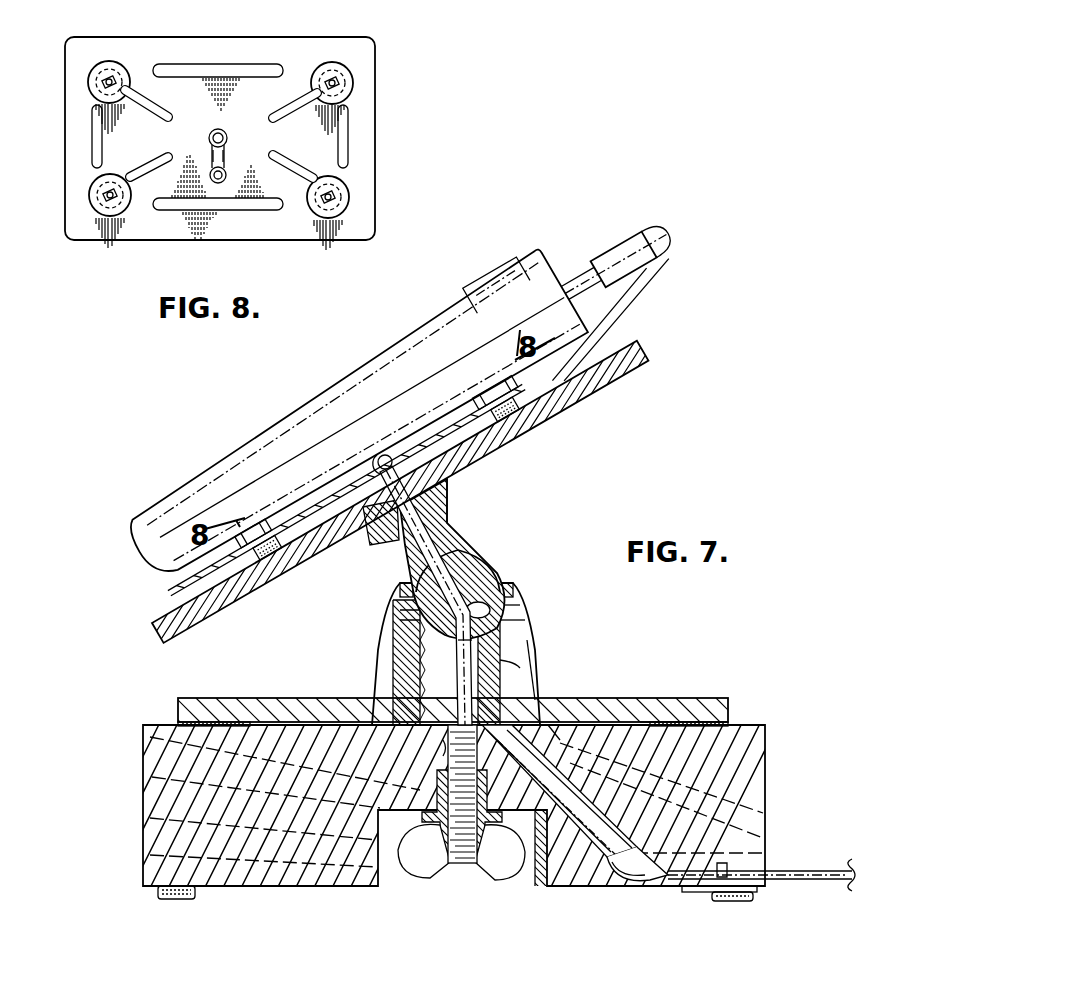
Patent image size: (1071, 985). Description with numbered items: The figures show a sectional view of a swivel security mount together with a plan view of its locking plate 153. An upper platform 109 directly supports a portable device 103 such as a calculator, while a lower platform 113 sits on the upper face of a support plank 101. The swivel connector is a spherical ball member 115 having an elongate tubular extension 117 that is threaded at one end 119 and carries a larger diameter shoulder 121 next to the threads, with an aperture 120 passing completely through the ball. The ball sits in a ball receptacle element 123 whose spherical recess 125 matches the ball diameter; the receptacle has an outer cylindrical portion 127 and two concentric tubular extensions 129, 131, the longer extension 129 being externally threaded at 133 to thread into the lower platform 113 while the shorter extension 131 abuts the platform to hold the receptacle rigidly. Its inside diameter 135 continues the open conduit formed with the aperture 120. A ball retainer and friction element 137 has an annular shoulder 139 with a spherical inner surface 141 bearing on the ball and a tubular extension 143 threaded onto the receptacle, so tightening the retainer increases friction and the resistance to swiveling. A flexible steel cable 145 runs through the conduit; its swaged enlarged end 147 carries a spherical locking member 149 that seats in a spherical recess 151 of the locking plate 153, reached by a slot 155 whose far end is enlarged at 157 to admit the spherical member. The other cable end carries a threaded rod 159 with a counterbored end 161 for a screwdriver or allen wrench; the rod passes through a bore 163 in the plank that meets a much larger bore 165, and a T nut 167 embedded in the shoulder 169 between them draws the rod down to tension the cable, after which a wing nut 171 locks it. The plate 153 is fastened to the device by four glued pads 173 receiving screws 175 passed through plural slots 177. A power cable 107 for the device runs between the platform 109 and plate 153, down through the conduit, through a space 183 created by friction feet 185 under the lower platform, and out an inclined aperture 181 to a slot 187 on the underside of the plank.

In FIG. 7, the plank 101 is at (210, 887).
In FIG. 7, the portable device 103 is at (203, 470).
In FIG. 7, the power cable 107 is at (648, 292).
In FIG. 7, the upper platform 109 is at (655, 358).
In FIG. 7, the lower platform 113 is at (605, 698).
In FIG. 7, the spherical ball member 115 is at (490, 565).
In FIG. 7, the elongate tubular extension 117 is at (447, 530).
In FIG. 7, the threads 119 is at (370, 545).
In FIG. 7, the aperture 120 is at (522, 606).
In FIG. 7, the shoulder 121 is at (443, 490).
In FIG. 7, the ball receptacle element 123 is at (385, 628).
In FIG. 7, the spherical recess 125 is at (400, 653).
In FIG. 7, the outer cylindrical portion 127 is at (527, 622).
In FIG. 7, the tubular extension 129 is at (520, 665).
In FIG. 7, the tubular extension 131 is at (538, 678).
In FIG. 7, the external threads 133 is at (395, 675).
In FIG. 7, the inside diameter 135 is at (435, 667).
In FIG. 7, the ball retainer and friction element 137 is at (515, 588).
In FIG. 7, the annular shoulder 139 is at (398, 590).
In FIG. 7, the spherical inner surface 141 is at (415, 580).
In FIG. 7, the tubular extension 143 is at (398, 617).
In FIG. 7, the flexible elongate cable 145 is at (468, 552).
In FIG. 7, the enlarged end 147 is at (383, 455).
In FIG. 7, the spherical locking member 149 is at (378, 455).
In FIG. 8, the spherical recess 151 is at (227, 138).
In FIG. 8, the locking plate 153 is at (375, 138).
In FIG. 7, the locking plate 153 is at (177, 597).
In FIG. 8, the slot 155 is at (238, 200).
In FIG. 8, the enlarged end of slot 157 is at (212, 180).
In FIG. 7, the threaded rod 159 is at (548, 726).
In FIG. 7, the counterbored end 161 is at (462, 865).
In FIG. 7, the bore 163 is at (443, 750).
In FIG. 7, the larger bore 165 is at (385, 887).
In FIG. 7, the T nut 167 is at (432, 860).
In FIG. 7, the shoulder 169 is at (538, 872).
In FIG. 7, the wing nut 171 is at (498, 855).
In FIG. 8, the pads 173 is at (118, 60).
In FIG. 7, the pads 173 is at (272, 530).
In FIG. 8, the screws 175 is at (108, 78).
In FIG. 7, the screws 175 is at (285, 545).
In FIG. 8, the slots 177 is at (230, 66).
In FIG. 7, the second through aperture 181 is at (660, 885).
In FIG. 7, the space 183 is at (655, 700).
In FIG. 7, the friction feet 185 is at (178, 724).
In FIG. 7, the slot 187 is at (615, 882).